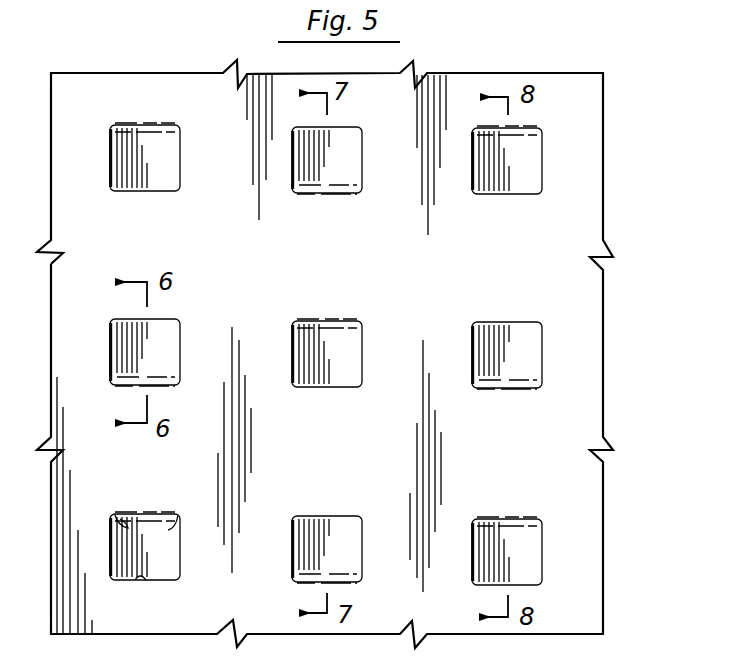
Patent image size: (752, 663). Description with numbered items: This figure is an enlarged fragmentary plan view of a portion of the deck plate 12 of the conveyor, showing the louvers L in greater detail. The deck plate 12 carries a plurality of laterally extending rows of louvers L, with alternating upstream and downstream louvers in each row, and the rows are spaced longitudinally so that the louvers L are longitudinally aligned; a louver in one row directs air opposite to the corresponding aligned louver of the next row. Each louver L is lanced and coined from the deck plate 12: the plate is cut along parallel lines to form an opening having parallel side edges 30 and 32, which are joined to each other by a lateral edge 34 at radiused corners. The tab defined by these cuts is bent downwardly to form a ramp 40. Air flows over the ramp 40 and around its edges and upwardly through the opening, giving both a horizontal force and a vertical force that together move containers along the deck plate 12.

The deck plate 12 is at (568, 418).
The ramp 40 is at (152, 180).
The louver L is at (190, 201).
The side edge 30 is at (127, 518).
The side edge 32 is at (170, 518).
The lateral edge 34 is at (134, 578).